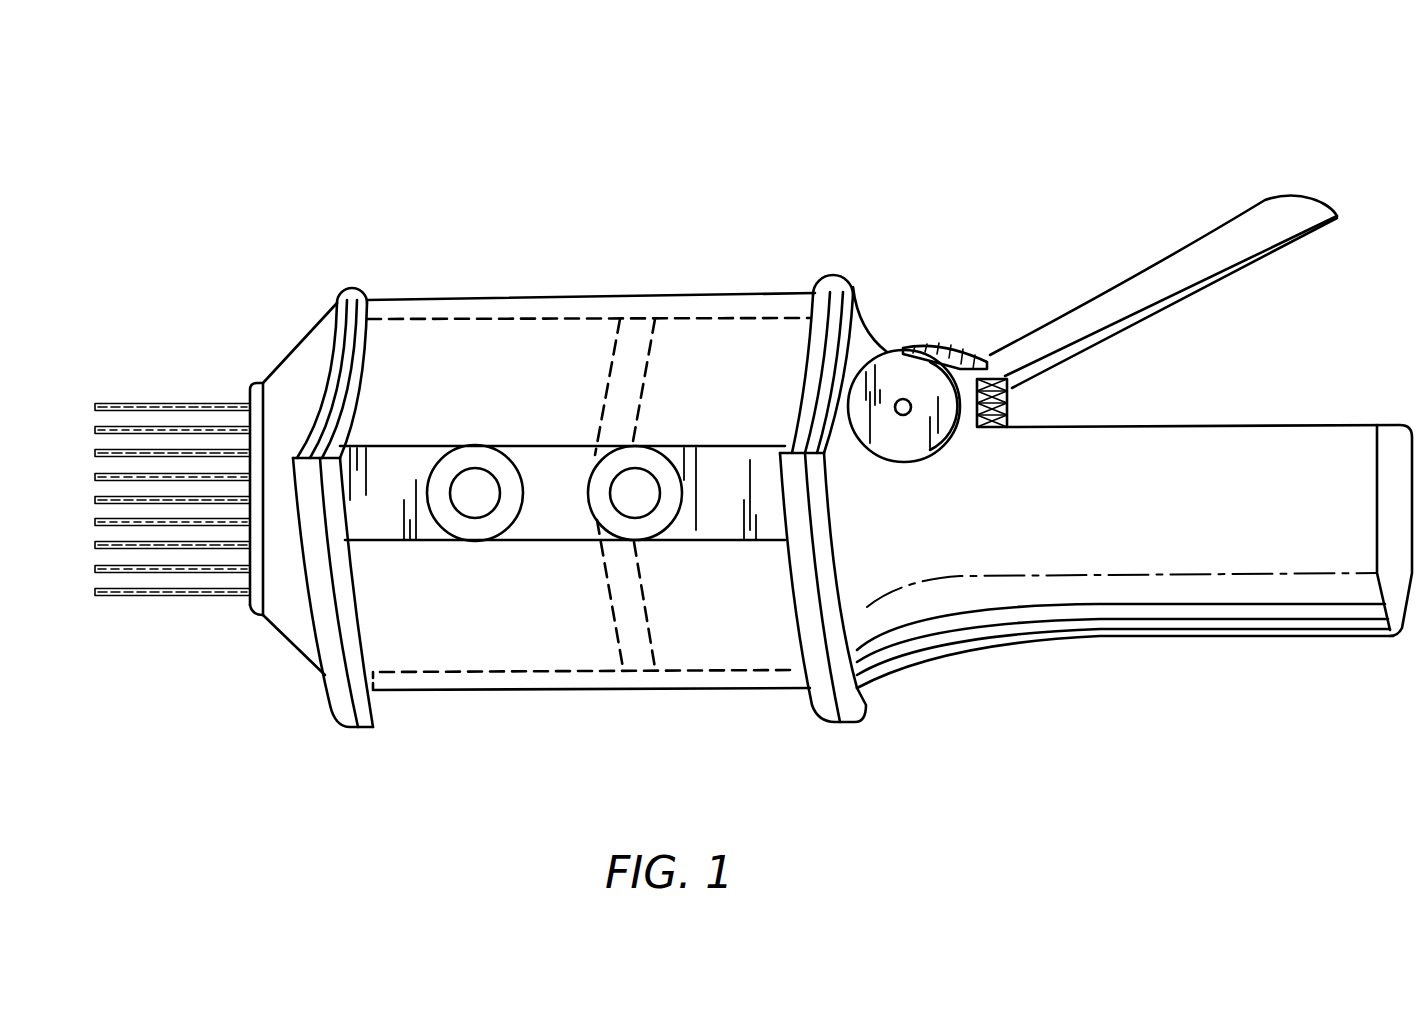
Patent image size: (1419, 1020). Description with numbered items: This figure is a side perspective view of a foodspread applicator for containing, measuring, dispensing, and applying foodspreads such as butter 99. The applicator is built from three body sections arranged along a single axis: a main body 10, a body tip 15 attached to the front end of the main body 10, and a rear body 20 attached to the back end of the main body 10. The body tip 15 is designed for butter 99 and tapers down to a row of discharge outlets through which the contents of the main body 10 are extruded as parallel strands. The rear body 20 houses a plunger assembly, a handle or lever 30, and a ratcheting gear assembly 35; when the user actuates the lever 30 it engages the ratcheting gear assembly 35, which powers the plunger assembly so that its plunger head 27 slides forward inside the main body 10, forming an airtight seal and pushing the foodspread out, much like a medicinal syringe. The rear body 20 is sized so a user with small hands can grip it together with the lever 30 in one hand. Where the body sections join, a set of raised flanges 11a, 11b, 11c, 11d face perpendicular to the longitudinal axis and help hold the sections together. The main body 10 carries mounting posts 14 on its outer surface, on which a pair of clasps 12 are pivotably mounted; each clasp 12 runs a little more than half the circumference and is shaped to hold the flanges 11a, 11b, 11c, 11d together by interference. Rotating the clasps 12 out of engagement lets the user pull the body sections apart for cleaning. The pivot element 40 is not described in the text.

The main body 10 is at (500, 690).
The flange 11a is at (340, 285).
The flange 11b is at (357, 285).
The flange 11c is at (825, 283).
The flange 11d is at (843, 283).
The clasp 12 is at (357, 727).
The mounting post 14 is at (635, 493).
The body tip 15 is at (293, 650).
The rear body 20 is at (1193, 638).
The plunger head 27 is at (640, 652).
The lever 30 is at (1286, 195).
The ratcheting gear assembly 35 is at (960, 345).
The pivot disc 40 is at (903, 350).
The butter 99 is at (170, 402).